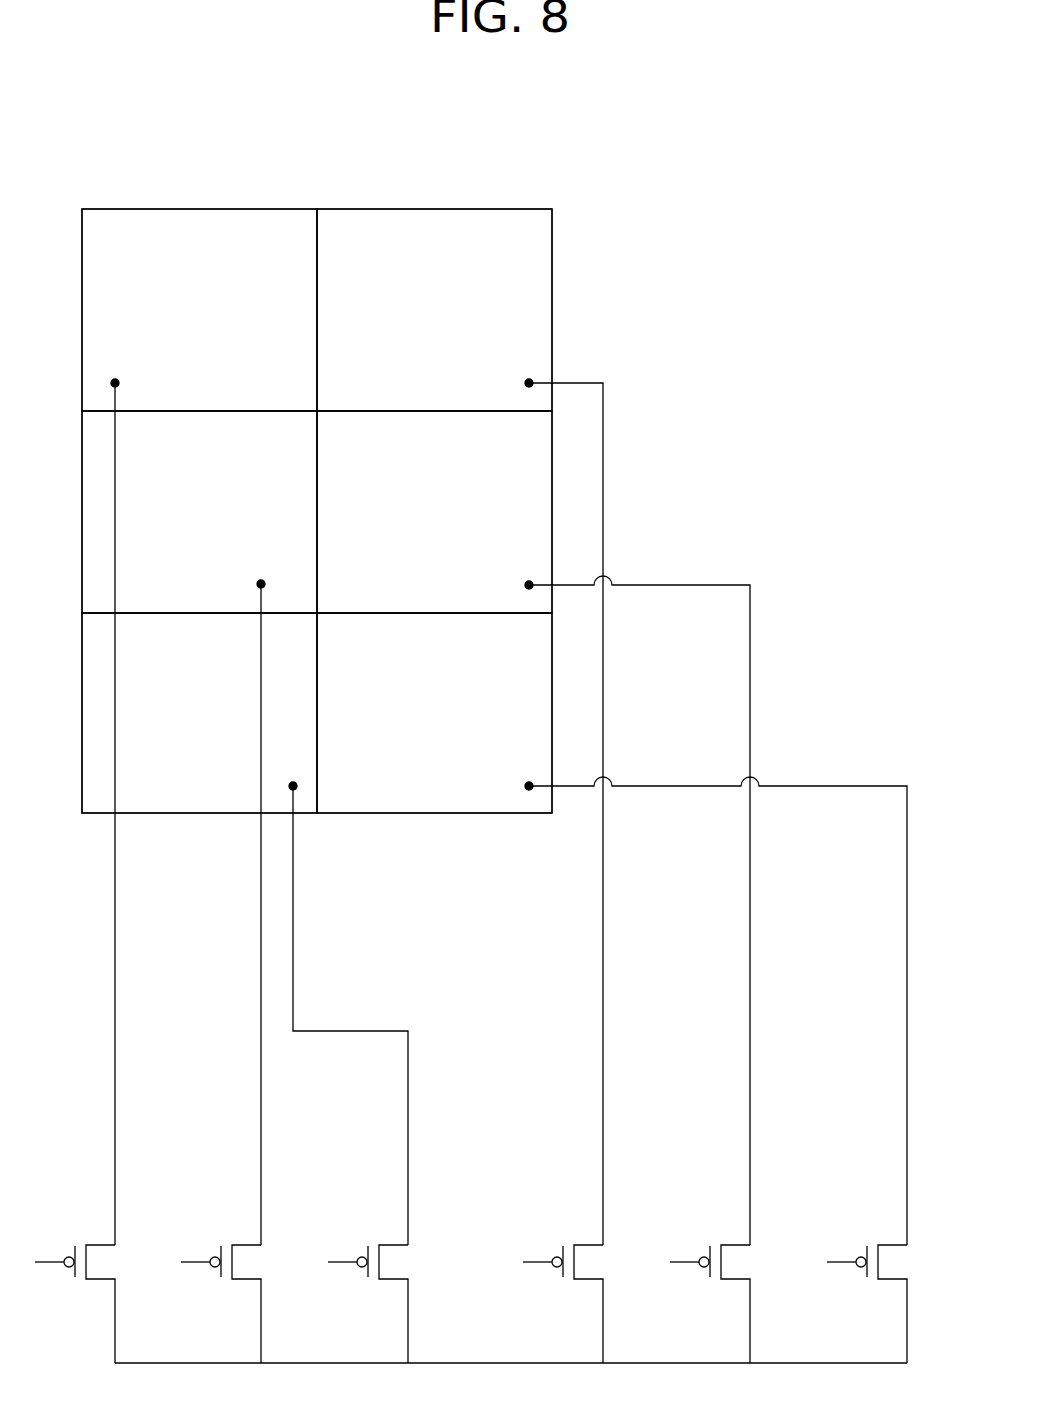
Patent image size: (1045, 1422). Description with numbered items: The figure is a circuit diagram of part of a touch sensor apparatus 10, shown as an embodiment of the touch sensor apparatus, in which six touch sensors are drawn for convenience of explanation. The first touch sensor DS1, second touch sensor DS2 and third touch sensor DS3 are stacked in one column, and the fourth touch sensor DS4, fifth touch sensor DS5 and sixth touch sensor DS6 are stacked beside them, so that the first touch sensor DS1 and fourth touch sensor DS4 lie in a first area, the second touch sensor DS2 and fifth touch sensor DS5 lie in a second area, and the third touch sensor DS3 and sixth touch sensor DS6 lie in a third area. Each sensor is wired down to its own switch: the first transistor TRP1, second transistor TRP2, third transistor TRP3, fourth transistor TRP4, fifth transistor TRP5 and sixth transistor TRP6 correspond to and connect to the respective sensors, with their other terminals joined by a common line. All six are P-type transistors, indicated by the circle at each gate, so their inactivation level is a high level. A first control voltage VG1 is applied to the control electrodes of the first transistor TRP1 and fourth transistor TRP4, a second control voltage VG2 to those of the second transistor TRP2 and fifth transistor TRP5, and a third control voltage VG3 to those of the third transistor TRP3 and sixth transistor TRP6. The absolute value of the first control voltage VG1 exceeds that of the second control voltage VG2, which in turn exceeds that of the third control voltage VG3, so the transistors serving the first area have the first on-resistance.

The touch sensor apparatus 10 is at (518, 142).
The first touch sensor DS1 is at (199, 310).
The second touch sensor DS2 is at (199, 512).
The third touch sensor DS3 is at (199, 713).
The fourth touch sensor DS4 is at (434, 310).
The fifth touch sensor DS5 is at (434, 512).
The sixth touch sensor DS6 is at (434, 713).
The first transistor TRP1 is at (108, 1304).
The second transistor TRP2 is at (254, 1304).
The third transistor TRP3 is at (401, 1304).
The fourth transistor TRP4 is at (596, 1304).
The fifth transistor TRP5 is at (743, 1304).
The sixth transistor TRP6 is at (900, 1304).
The first control voltage VG1 is at (294, 1246).
The second control voltage VG2 is at (440, 1246).
The third control voltage VG3 is at (591, 1246).